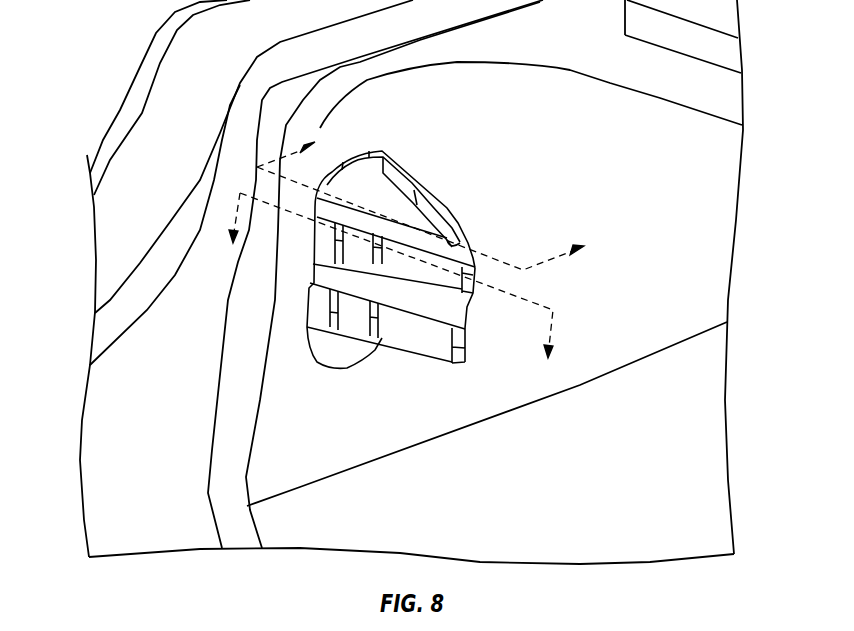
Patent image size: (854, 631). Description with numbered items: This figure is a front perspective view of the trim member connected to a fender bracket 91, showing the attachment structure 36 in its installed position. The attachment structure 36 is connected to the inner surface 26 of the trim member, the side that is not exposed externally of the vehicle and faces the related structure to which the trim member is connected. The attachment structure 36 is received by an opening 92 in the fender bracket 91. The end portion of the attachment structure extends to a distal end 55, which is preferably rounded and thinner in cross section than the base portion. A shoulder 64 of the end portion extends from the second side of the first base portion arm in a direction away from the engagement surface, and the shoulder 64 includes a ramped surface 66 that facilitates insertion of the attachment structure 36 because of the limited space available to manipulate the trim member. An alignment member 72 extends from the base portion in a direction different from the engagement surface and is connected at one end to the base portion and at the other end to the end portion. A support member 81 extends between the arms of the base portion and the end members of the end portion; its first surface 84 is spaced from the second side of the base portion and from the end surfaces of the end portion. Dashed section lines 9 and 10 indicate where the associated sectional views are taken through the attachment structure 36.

The inner surface 26 is at (100, 380).
The fender bracket 91 is at (225, 365).
The section line 9 is at (432, 199).
The section line 10 is at (386, 293).
The attachment structure 36 is at (450, 215).
The alignment member 72 is at (400, 176).
The first surface 84 is at (435, 295).
The shoulder 64 is at (402, 333).
The ramped surface 66 is at (347, 315).
The opening 92 is at (313, 362).
The distal end 55 is at (465, 362).
The support member 81 is at (462, 297).